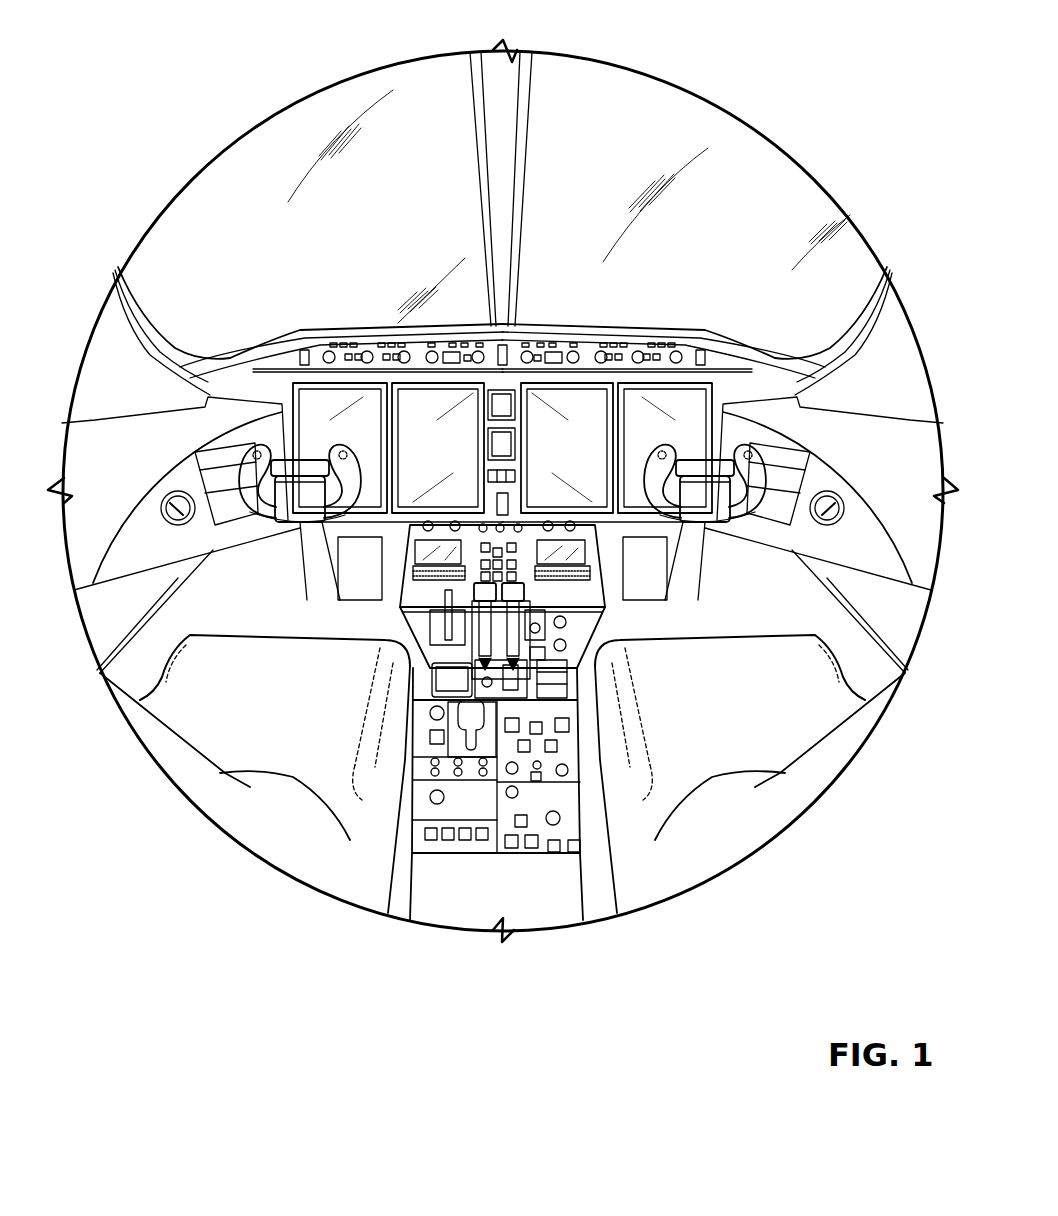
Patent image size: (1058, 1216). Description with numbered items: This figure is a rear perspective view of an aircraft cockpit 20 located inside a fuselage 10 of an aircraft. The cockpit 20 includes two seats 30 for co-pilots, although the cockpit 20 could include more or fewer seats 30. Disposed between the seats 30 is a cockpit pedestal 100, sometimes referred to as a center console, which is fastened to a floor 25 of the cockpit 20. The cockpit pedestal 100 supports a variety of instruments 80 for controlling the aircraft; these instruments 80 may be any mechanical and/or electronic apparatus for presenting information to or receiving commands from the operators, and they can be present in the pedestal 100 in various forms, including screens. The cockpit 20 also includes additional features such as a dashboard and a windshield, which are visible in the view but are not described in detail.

The fuselage 10 is at (265, 117).
The aircraft cockpit 20 is at (849, 382).
The floor 25 is at (397, 877).
The seats 30 is at (257, 805).
The instruments 80 is at (538, 527).
The cockpit pedestal 100 is at (543, 888).